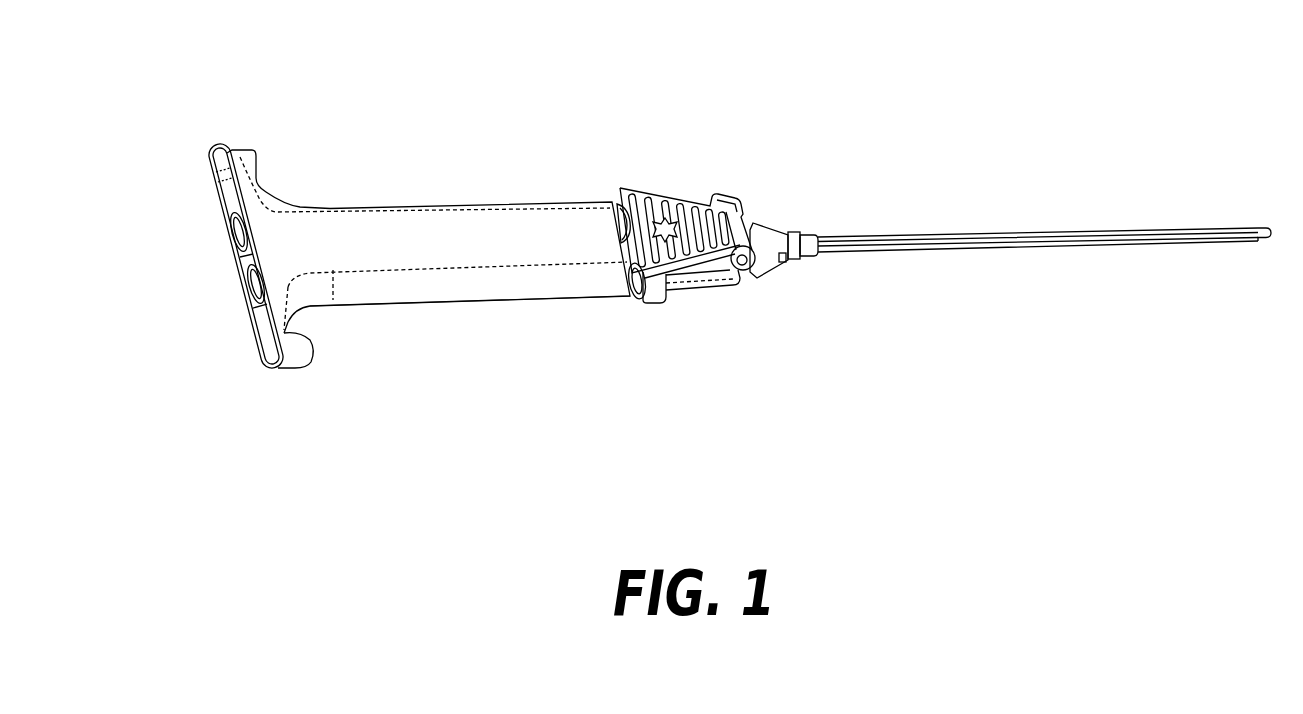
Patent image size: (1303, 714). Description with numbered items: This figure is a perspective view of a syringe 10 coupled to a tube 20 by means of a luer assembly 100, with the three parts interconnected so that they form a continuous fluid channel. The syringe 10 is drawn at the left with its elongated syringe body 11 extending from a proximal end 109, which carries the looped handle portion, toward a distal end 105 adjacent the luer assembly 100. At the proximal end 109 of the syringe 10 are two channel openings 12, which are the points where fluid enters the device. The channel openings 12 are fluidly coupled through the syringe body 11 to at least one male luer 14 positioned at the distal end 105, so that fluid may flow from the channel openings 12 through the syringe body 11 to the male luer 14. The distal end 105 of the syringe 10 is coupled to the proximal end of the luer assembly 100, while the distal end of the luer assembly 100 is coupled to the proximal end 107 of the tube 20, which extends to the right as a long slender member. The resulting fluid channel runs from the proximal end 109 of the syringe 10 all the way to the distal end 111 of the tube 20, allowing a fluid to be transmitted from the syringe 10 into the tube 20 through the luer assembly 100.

The syringe 10 is at (418, 201).
The syringe body 11 is at (440, 287).
The channel opening 12 is at (248, 288).
The male luer 14 is at (637, 300).
The tube 20 is at (1025, 228).
The luer assembly 100 is at (657, 179).
The distal end of the syringe 105 is at (609, 199).
The proximal end of the tube 107 is at (826, 231).
The proximal end of the syringe 109 is at (211, 150).
The distal end of the tube 111 is at (1262, 225).